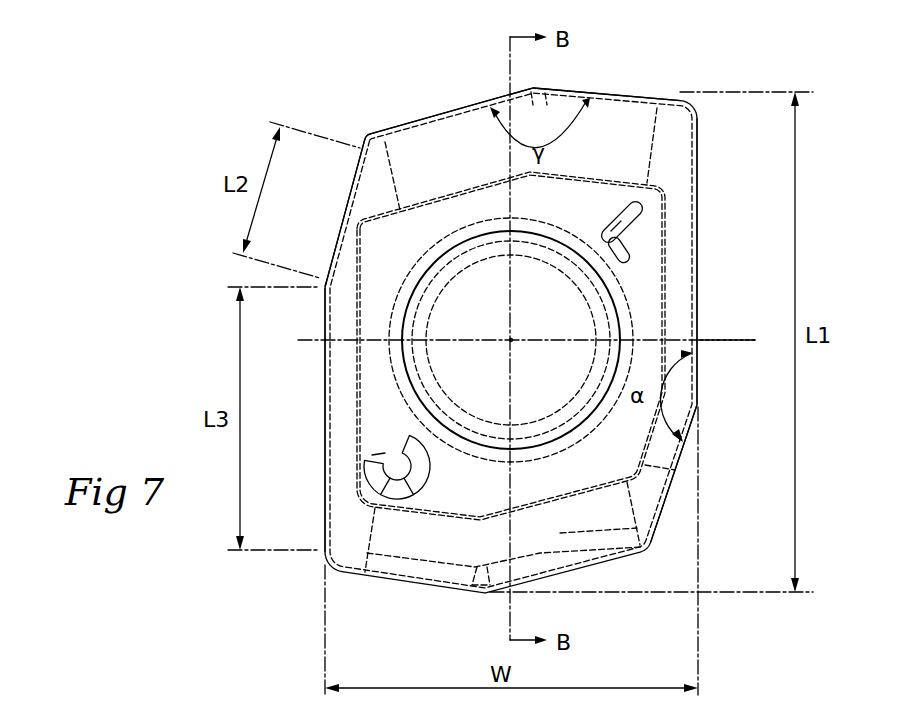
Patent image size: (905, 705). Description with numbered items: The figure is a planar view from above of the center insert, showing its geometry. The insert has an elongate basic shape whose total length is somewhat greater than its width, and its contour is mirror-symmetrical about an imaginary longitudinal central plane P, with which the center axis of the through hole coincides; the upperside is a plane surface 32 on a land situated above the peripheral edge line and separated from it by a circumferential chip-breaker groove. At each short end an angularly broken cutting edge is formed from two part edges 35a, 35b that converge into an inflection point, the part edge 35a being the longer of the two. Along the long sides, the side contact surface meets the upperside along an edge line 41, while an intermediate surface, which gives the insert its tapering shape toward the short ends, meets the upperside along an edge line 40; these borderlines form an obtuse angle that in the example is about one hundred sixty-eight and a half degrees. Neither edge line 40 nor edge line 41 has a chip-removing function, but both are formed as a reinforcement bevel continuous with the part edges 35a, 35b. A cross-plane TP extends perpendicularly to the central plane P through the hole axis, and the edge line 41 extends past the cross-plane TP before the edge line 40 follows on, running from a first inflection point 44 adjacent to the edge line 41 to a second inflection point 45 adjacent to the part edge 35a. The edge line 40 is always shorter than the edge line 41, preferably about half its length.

The upperside 32 is at (610, 473).
The part edge 35a is at (468, 109).
The part edge 35b is at (643, 102).
The edge line 40 is at (340, 226).
The edge line 41 is at (325, 417).
The first inflection point 44 is at (325, 286).
The second inflection point 45 is at (372, 142).
The longitudinal central plane P is at (513, 398).
The cross-plane TP is at (725, 340).